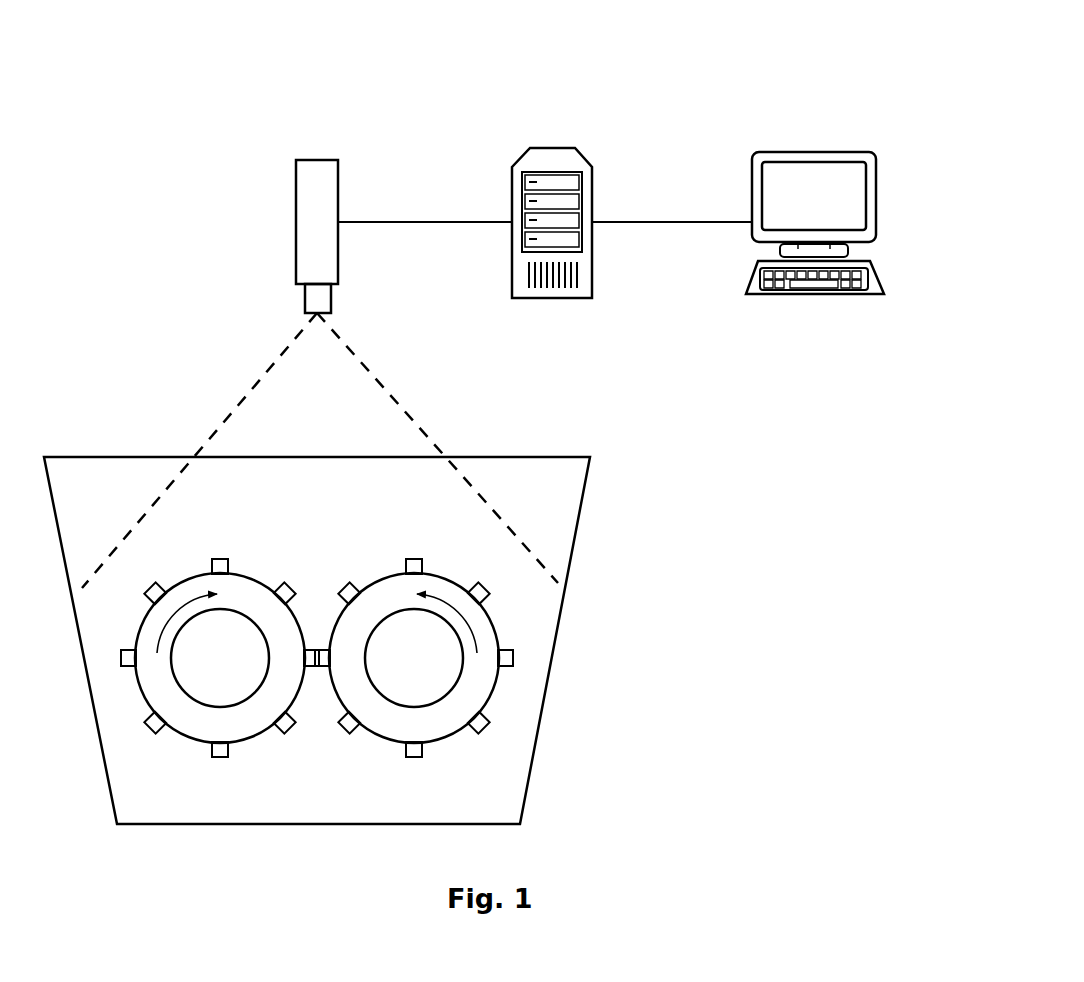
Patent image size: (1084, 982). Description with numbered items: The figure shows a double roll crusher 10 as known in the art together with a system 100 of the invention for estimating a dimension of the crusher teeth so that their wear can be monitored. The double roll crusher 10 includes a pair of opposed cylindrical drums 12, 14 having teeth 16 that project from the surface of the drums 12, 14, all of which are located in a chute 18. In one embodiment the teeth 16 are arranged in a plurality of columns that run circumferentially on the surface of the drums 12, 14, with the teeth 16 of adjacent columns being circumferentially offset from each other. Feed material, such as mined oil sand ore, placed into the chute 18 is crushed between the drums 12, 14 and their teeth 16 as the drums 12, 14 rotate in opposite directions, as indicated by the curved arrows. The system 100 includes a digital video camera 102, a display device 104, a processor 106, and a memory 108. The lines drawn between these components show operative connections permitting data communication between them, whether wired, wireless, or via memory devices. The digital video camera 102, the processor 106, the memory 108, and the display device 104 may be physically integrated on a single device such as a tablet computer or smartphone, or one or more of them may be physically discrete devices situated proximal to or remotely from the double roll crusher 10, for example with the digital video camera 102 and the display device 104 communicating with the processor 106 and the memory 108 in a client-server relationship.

The system 100 is at (254, 77).
The double roll crusher 10 is at (124, 404).
The cylindrical drum 12 is at (220, 658).
The cylindrical drum 14 is at (414, 658).
The teeth 16 is at (228, 565).
The chute 18 is at (590, 478).
The digital video camera 102 is at (338, 172).
The display device 104 is at (876, 168).
The processor 106 is at (592, 170).
The memory 108 is at (552, 232).